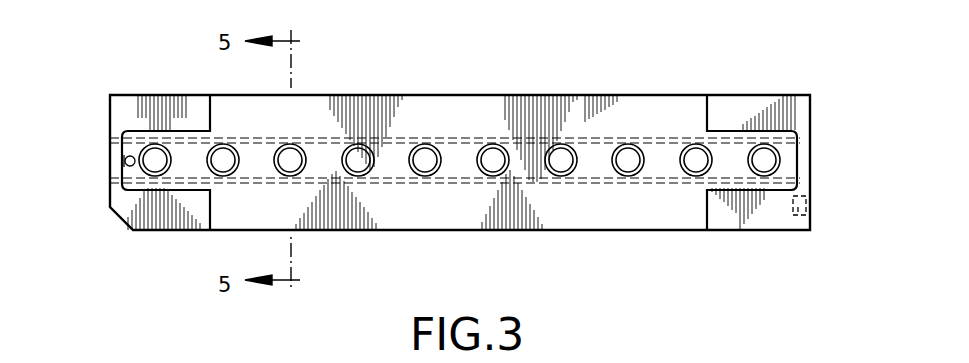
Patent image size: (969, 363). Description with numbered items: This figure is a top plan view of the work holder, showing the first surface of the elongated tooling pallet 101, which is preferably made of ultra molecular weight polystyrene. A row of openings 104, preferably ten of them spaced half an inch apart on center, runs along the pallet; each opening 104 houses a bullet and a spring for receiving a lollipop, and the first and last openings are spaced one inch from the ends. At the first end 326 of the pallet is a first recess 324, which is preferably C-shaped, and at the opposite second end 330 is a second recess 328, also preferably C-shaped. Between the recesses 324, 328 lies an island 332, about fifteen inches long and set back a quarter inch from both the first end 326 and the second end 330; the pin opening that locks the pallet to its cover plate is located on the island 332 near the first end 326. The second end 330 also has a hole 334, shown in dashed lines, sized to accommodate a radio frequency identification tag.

The tooling pallet 101 is at (513, 95).
The openings 104 is at (292, 162).
The first recess 324 is at (163, 96).
The first end 326 is at (110, 160).
The second recess 328 is at (760, 96).
The second end 330 is at (810, 153).
The island 332 is at (512, 228).
The hole 334 is at (802, 216).